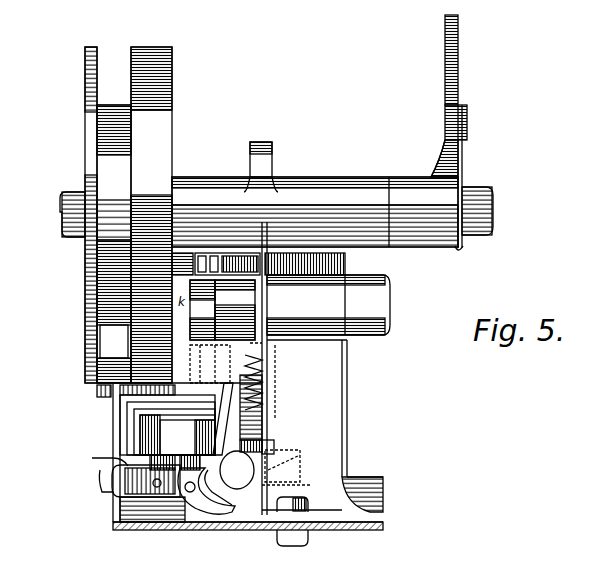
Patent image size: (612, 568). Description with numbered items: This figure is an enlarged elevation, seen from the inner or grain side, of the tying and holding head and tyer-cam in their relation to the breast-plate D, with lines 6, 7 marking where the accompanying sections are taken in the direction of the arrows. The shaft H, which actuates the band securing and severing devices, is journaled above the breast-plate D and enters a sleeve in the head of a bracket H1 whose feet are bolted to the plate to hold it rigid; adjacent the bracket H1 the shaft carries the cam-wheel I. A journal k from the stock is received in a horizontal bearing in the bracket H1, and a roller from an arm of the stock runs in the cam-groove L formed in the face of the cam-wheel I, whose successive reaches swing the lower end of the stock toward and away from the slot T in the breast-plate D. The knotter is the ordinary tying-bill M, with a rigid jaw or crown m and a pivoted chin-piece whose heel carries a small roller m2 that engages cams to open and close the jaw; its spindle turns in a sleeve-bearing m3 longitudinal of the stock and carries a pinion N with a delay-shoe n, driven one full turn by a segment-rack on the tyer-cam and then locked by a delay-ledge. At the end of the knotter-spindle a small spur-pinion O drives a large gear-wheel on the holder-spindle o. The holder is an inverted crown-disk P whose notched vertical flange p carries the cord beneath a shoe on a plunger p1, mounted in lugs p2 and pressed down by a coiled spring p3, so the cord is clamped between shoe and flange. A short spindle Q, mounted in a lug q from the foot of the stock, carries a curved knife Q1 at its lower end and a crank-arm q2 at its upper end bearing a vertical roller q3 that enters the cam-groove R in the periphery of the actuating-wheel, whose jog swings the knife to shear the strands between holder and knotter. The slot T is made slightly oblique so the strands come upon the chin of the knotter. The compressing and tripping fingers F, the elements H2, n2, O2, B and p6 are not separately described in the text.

The shaft H is at (82, 192).
The bracket H1 is at (240, 431).
The sleeve on shaft H2 is at (319, 132).
The cam-groove R is at (114, 244).
The cam-wheel I is at (151, 215).
The toothed rim n2 is at (172, 85).
The section line 6 is at (130, 208).
The section line 7 is at (130, 251).
The spur-pinion O is at (216, 263).
The bracket arm O2 is at (345, 265).
The journal k is at (388, 322).
The cam-groove L is at (202, 310).
The sleeve-bearing m3 is at (212, 436).
The vertical roller q3 is at (113, 358).
The crank-arm q2 is at (97, 391).
The delay-shoe n is at (174, 386).
The holder-spindle o is at (211, 364).
The pinion N is at (232, 378).
The coiled spring p3 is at (270, 386).
The bearing block B is at (142, 423).
The lug q is at (142, 450).
The small roller m2 is at (180, 457).
The lugs p2 is at (251, 403).
The shank or plunger p1 is at (270, 447).
The vertical flange p is at (302, 465).
The pivot p6 is at (287, 492).
The inverted crown-disk P is at (301, 498).
The compressing and tripping fingers F is at (237, 470).
The short spindle Q is at (135, 476).
The curved knife Q1 is at (164, 487).
The tying-bill M is at (186, 495).
The rigid jaw or crown m is at (205, 512).
The slot T is at (205, 531).
The breast-plate D is at (312, 532).